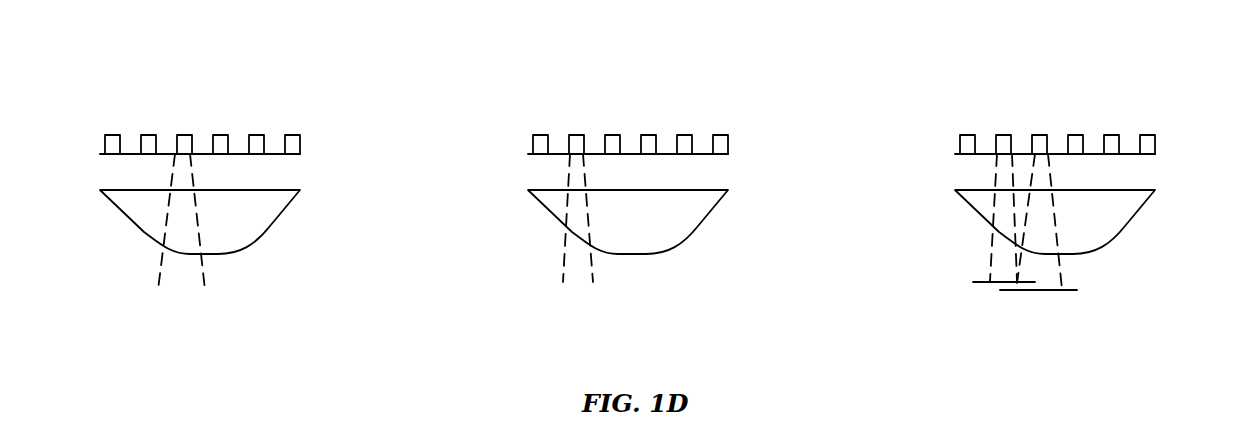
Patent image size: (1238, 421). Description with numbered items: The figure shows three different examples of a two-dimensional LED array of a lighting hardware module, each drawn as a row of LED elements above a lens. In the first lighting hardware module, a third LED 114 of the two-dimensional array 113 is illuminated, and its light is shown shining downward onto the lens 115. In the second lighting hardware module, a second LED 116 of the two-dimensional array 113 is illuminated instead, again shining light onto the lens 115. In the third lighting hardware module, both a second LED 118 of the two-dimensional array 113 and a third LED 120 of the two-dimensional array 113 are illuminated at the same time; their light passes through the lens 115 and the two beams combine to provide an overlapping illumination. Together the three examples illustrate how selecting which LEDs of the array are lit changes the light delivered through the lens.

The 2D array 113 is at (220, 123).
The third LED 114 is at (190, 305).
The lens 115 is at (282, 213).
The second LED 116 is at (573, 305).
The second LED 118 is at (993, 305).
The third LED 120 is at (1065, 305).